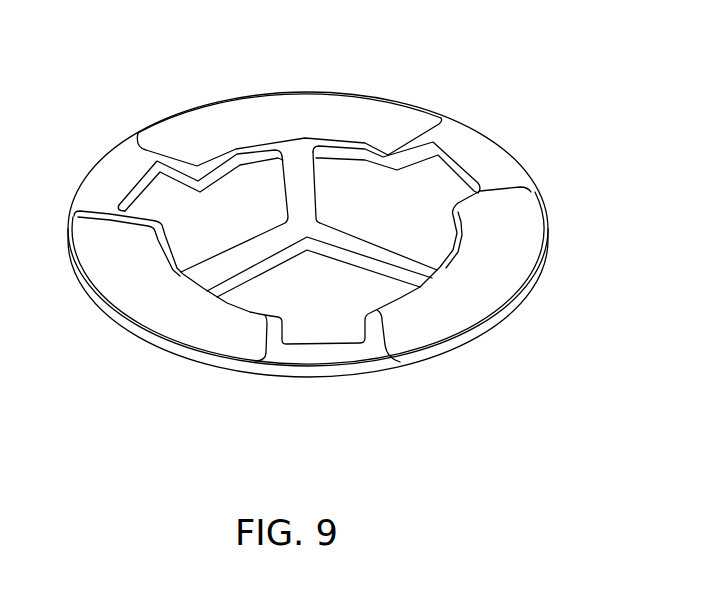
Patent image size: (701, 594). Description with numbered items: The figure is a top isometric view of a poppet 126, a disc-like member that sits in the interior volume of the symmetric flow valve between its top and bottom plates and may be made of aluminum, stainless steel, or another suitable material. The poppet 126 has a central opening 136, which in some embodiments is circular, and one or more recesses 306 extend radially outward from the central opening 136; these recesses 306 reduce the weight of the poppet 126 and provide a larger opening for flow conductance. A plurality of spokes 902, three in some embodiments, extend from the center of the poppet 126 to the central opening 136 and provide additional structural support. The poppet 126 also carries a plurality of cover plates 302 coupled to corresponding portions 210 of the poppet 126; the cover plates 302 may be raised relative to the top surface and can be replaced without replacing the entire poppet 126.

The poppet 126 is at (155, 92).
The cover plates 302 is at (272, 108).
The portions 210 is at (370, 122).
The recesses 306 is at (463, 160).
The spokes 902 is at (282, 184).
The central opening 136 is at (365, 152).